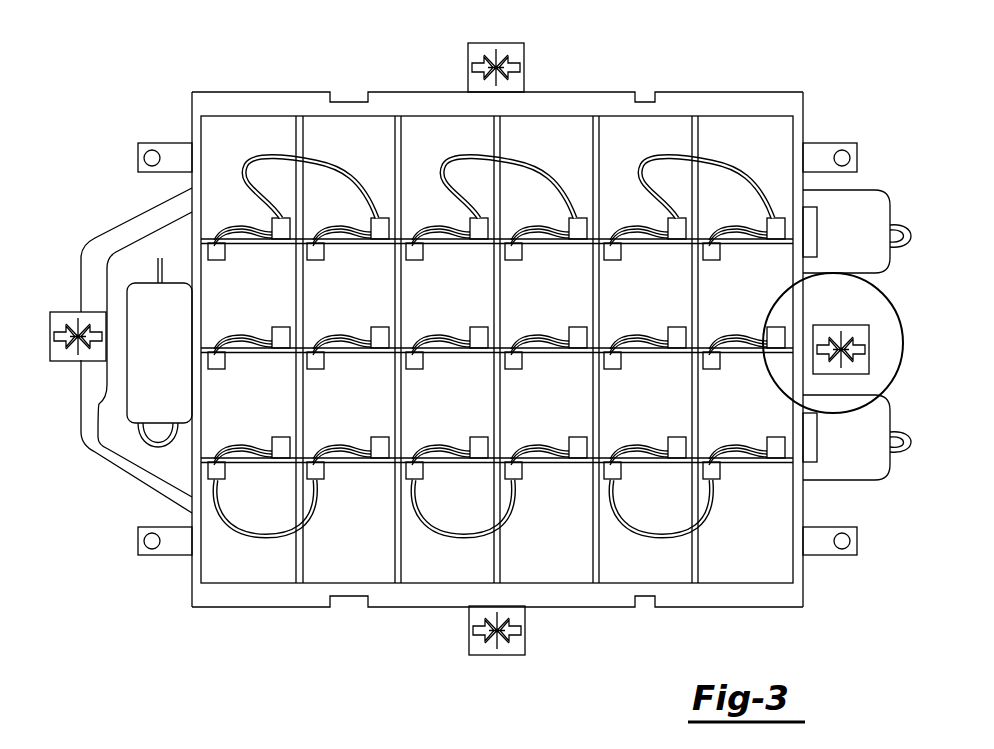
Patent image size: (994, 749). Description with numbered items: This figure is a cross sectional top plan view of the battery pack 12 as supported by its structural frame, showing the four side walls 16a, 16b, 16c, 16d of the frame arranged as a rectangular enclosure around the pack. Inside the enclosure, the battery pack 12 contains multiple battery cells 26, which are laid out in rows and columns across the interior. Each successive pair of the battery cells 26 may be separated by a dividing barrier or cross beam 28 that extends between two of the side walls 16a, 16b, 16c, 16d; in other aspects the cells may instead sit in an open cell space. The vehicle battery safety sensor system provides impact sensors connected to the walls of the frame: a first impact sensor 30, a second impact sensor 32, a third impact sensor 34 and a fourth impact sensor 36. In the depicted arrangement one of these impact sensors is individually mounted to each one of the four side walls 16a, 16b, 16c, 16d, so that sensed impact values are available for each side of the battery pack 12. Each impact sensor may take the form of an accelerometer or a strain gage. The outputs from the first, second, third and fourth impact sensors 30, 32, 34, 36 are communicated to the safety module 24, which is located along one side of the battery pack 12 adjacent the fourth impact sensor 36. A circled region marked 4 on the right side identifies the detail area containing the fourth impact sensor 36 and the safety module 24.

The battery pack 12 is at (845, 88).
The side wall 16a is at (406, 108).
The side wall 16b is at (800, 580).
The side wall 16c is at (293, 600).
The side wall 16d is at (195, 565).
The safety module 24 is at (868, 415).
The battery cells 26 is at (245, 125).
The cross beam 28 is at (305, 125).
The first impact sensor 30 is at (468, 630).
The second impact sensor 32 is at (50, 335).
The third impact sensor 34 is at (512, 43).
The fourth impact sensor 36 is at (870, 348).
The detail view indicator 4 is at (834, 343).